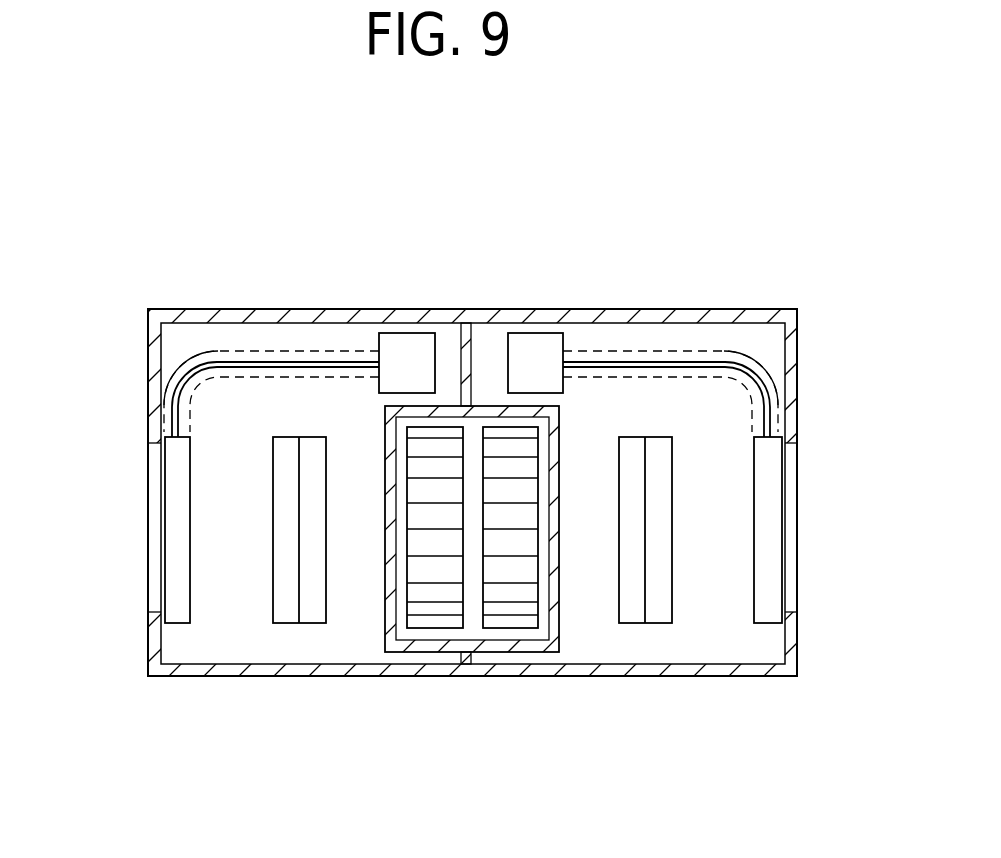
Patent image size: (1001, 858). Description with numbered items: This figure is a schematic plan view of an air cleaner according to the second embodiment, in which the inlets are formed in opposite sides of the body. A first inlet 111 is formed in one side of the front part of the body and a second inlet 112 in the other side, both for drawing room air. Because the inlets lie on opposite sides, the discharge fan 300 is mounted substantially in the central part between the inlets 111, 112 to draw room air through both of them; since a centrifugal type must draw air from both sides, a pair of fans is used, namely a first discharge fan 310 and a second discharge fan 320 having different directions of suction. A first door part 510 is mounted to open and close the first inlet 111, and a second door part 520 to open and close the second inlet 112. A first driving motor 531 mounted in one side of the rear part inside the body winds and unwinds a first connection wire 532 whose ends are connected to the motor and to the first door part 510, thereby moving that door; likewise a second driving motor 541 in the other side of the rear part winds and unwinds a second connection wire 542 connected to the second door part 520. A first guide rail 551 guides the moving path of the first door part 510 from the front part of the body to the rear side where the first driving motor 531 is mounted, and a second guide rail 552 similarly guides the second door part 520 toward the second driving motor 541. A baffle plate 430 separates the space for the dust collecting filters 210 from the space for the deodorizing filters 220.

The first inlet 111 is at (154, 597).
The second inlet 112 is at (788, 594).
The dust collecting filters 210 is at (285, 613).
The deodorizing filters 220 is at (631, 613).
The discharge fan 300 is at (472, 620).
The first discharge fan 310 is at (433, 610).
The second discharge fan 320 is at (511, 610).
The baffle plate 430 is at (470, 345).
The first door part 510 is at (177, 517).
The second door part 520 is at (767, 512).
The first driving motor 531 is at (400, 343).
The first connection wire 532 is at (286, 361).
The second driving motor 541 is at (548, 343).
The second connection wire 542 is at (660, 361).
The first guide rail 551 is at (185, 358).
The second guide rail 552 is at (758, 355).